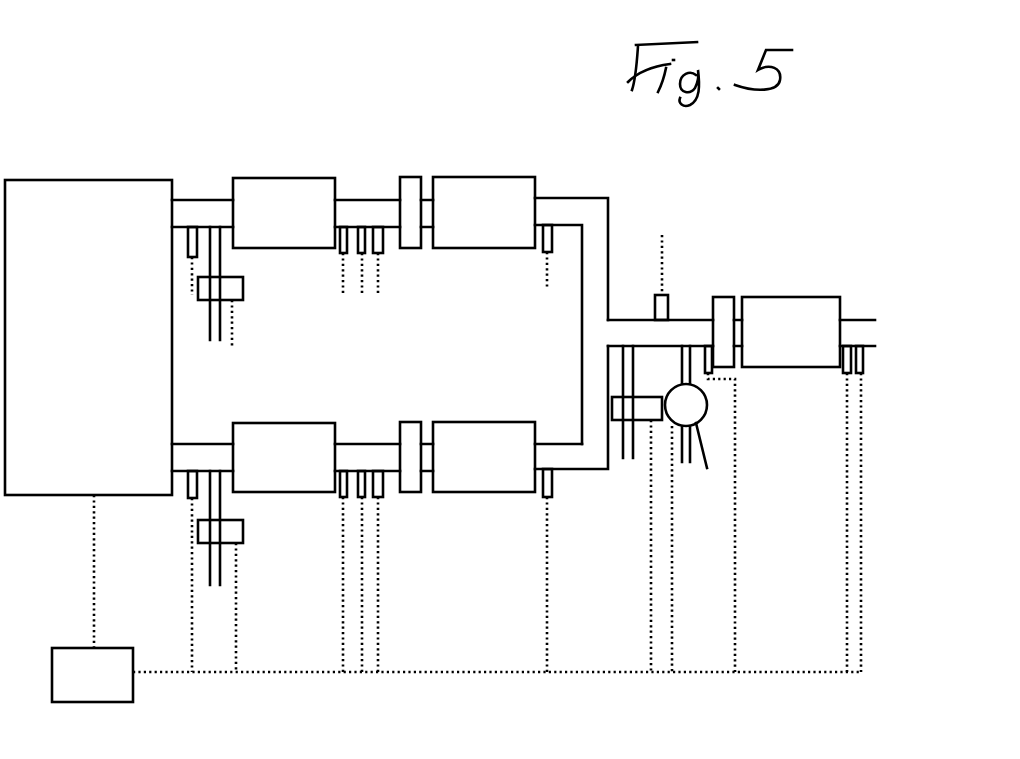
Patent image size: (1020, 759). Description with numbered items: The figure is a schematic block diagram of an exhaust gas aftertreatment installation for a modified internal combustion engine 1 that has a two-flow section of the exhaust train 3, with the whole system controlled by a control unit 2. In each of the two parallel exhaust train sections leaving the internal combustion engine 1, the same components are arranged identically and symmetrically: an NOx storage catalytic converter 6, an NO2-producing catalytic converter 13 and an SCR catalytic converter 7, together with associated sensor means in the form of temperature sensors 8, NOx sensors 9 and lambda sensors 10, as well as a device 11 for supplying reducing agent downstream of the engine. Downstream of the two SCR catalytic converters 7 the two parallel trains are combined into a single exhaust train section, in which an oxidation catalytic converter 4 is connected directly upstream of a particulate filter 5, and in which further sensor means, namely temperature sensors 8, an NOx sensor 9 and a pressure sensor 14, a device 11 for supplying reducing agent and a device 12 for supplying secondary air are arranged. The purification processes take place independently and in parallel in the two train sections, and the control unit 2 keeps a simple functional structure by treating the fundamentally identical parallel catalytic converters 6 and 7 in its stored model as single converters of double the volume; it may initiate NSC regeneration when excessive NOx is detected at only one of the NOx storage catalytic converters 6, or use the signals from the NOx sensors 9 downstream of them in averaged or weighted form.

The internal combustion engine 1 is at (87, 203).
The control unit 2 is at (117, 663).
The exhaust train 3 is at (388, 210).
The oxidation catalytic converter 4 is at (724, 297).
The particulate filter 5 is at (815, 297).
The NOx storage catalytic converter 6 is at (292, 228).
The SCR catalytic converter 7 is at (479, 210).
The temperature sensor 8 is at (338, 250).
The NOx sensor 9 is at (383, 254).
The lambda sensor 10 is at (192, 258).
The device for supplying reducing agent 11 is at (233, 289).
The device for supplying secondary air 12 is at (693, 509).
The NO2-producing catalytic converter 13 is at (407, 190).
The pressure sensor 14 is at (845, 373).